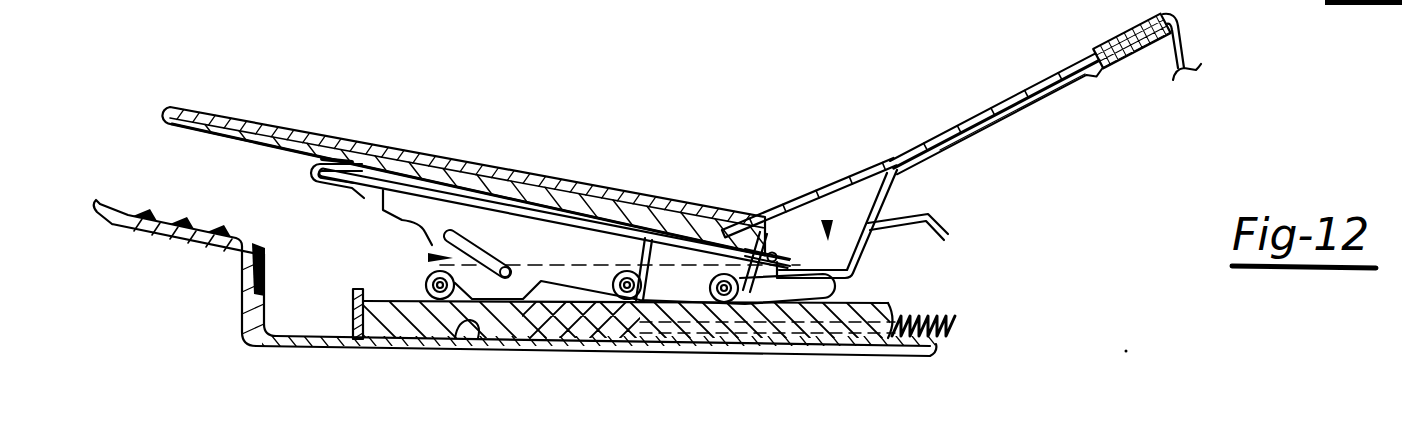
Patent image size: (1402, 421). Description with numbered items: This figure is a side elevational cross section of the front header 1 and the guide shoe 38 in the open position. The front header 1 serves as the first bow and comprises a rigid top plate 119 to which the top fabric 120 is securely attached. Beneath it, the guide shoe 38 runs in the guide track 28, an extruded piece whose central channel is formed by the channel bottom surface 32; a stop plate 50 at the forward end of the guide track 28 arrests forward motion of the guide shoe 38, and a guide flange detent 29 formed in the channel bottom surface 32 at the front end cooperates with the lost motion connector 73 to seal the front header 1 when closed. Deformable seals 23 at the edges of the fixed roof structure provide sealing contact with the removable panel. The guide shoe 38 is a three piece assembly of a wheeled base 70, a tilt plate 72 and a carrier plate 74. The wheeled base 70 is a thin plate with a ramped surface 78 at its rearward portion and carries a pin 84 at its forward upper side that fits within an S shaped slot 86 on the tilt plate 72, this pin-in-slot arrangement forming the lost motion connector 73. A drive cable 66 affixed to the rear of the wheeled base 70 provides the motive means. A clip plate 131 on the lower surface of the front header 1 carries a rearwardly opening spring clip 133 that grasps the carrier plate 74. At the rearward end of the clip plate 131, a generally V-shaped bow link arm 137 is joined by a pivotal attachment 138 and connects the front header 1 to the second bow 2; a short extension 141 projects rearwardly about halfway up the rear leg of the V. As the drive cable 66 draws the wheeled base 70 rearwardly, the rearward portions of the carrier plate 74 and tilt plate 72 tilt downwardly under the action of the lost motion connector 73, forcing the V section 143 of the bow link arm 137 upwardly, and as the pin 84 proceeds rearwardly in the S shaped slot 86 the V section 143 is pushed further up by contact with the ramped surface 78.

The front header 1 is at (381, 156).
The second bow 2 is at (1036, 86).
The deformable seals 23 is at (170, 244).
The guide track 28 is at (607, 338).
The guide flange detent 29 is at (455, 340).
The channel bottom surface 32 is at (545, 340).
The guide shoe 38 is at (400, 207).
The stop plate 50 is at (352, 340).
The drive cable 66 is at (930, 312).
The wheeled base 70 is at (673, 295).
The tilt plate 72 is at (548, 228).
The lost motion connector 73 is at (428, 258).
The carrier plate 74 is at (418, 192).
The ramped surface 78 is at (718, 306).
The pin 84 is at (511, 271).
The S shaped slot 86 is at (548, 227).
The rigid top plate 119 is at (247, 122).
The top fabric 120 is at (903, 152).
The clip plate 131 is at (647, 212).
The spring clip 133 is at (312, 185).
The bow link arm 137 is at (976, 138).
The pivotal attachment 138 is at (772, 252).
The short extension 141 is at (945, 222).
The V section 143 is at (826, 222).